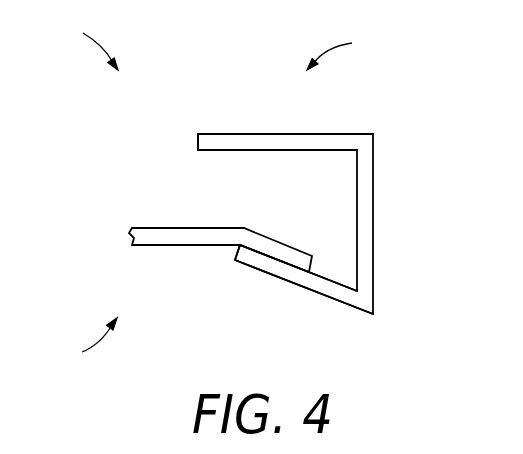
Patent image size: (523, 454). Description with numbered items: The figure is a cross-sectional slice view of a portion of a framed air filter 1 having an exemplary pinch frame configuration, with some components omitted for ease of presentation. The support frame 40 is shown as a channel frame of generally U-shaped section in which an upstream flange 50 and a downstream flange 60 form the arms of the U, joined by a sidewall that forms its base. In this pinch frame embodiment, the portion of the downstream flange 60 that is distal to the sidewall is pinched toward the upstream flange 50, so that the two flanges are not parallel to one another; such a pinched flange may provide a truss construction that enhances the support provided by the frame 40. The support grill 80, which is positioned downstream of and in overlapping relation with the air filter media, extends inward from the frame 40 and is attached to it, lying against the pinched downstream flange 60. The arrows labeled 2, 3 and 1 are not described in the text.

The framed air filter 1 is at (337, 48).
The second direction 2 is at (91, 42).
The third direction 3 is at (91, 345).
The support frame 40 is at (343, 134).
The upstream flange 50 is at (237, 134).
The downstream flange 60 is at (283, 279).
The support grill 80 is at (160, 246).